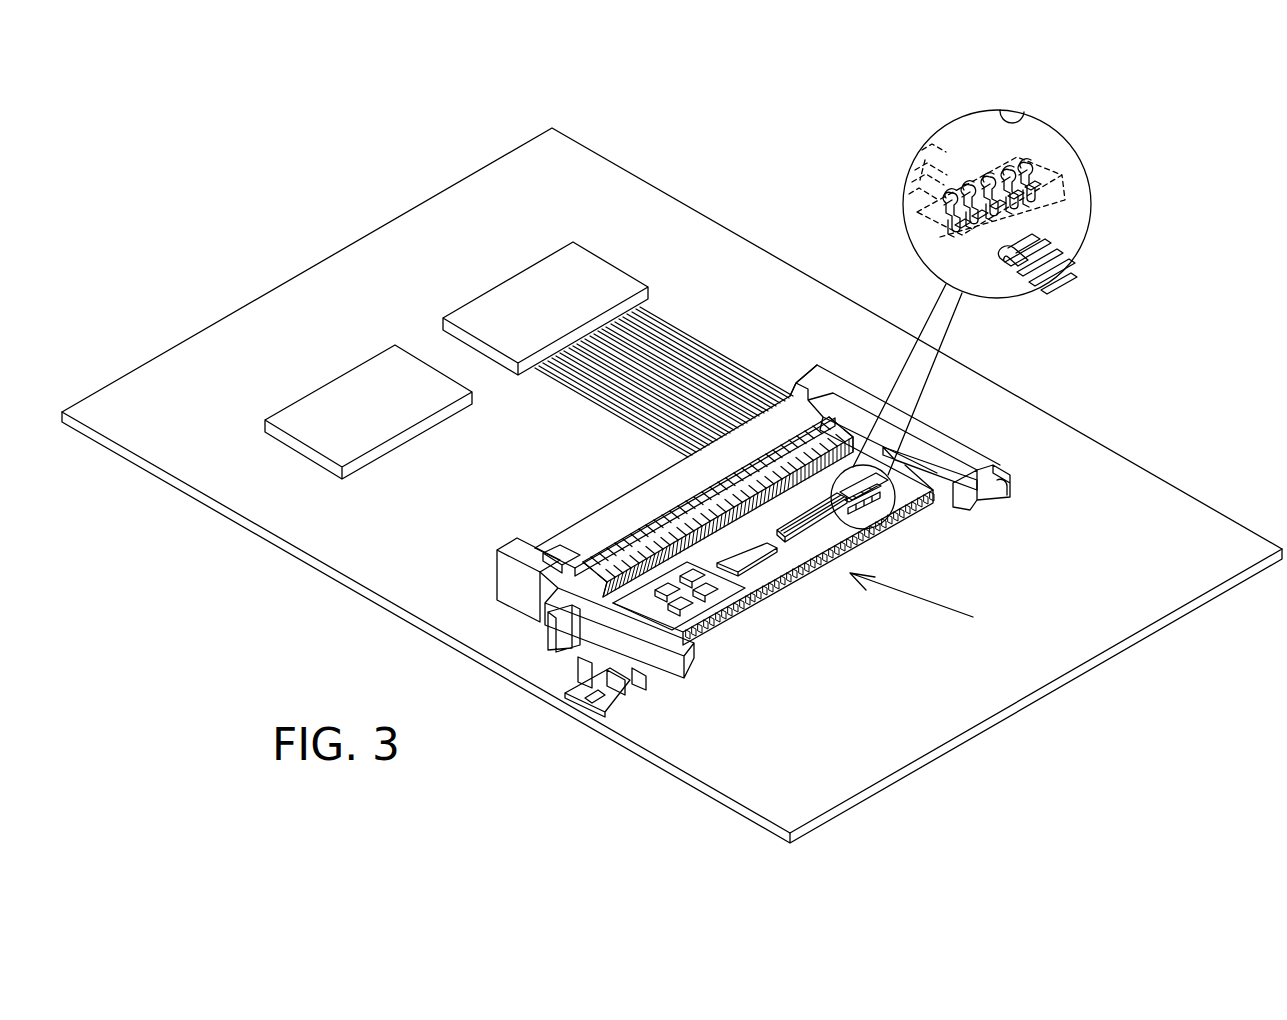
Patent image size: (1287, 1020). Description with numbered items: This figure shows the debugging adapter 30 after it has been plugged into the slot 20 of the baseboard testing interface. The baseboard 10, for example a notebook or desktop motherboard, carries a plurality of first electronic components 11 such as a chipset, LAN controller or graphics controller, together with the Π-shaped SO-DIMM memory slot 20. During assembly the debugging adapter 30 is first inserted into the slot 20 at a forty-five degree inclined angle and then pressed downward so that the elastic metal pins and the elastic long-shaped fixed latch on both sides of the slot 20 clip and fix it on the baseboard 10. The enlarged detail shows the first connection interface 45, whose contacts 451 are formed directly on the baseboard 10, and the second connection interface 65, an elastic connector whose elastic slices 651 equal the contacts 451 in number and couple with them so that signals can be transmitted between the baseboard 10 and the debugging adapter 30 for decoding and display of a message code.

The baseboard 10 is at (735, 240).
The first electronic components 11 is at (535, 300).
The slot 20 is at (873, 455).
The debugging adapter 30 is at (897, 457).
The first connection interface 45 is at (1068, 187).
The contacts 451 is at (1055, 213).
The second connection interface 65 is at (1037, 160).
The elastic slices 651 is at (1023, 167).